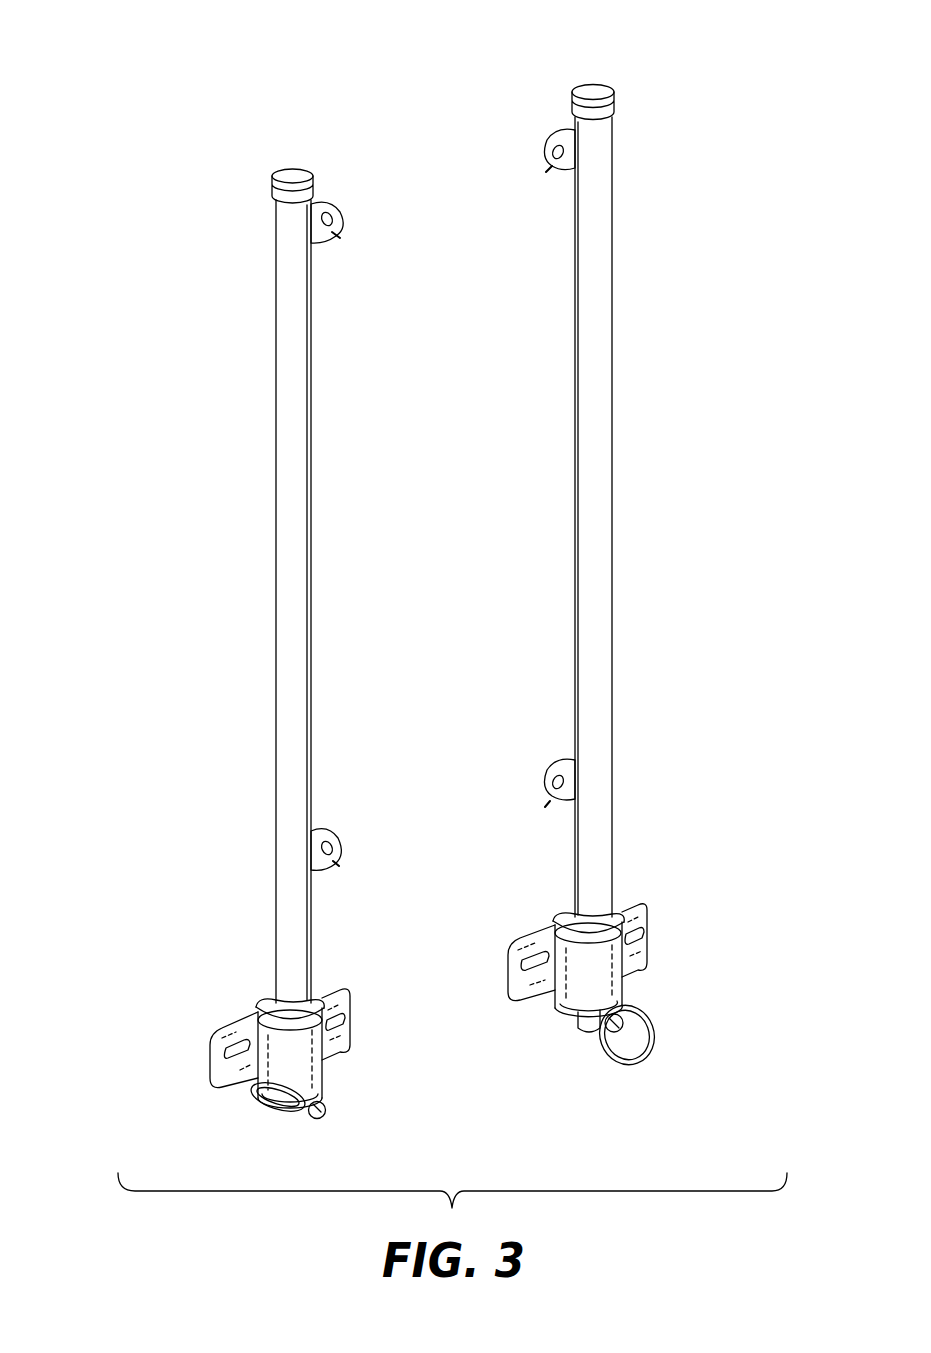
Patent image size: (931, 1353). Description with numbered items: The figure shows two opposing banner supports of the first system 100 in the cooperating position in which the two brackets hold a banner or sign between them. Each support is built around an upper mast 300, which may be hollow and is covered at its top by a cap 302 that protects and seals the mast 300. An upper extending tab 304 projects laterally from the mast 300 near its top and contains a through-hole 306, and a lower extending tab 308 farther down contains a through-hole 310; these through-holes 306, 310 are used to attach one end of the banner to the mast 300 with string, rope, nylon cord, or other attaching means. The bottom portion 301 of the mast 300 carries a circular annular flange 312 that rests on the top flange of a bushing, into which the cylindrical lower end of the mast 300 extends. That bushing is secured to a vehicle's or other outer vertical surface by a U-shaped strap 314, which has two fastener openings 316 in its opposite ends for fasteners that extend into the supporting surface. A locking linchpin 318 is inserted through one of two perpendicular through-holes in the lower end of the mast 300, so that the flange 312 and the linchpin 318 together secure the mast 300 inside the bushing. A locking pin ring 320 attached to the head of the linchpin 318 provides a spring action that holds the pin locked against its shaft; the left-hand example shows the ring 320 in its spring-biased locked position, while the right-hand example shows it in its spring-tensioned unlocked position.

The first system 100 is at (155, 422).
The upper mast 300 is at (312, 525).
The bottom portion 301 is at (190, 948).
The cap 302 is at (292, 188).
The upper extending tab 304 is at (328, 203).
The through-hole 306 is at (343, 228).
The lower extending tab 308 is at (328, 828).
The through-hole 310 is at (342, 857).
The annular flange 312 is at (318, 1000).
The U-shaped strap 314 is at (324, 1065).
The fastener openings 316 is at (212, 1050).
The locking linchpin 318 is at (328, 1105).
The locking pin ring 320 is at (263, 1096).